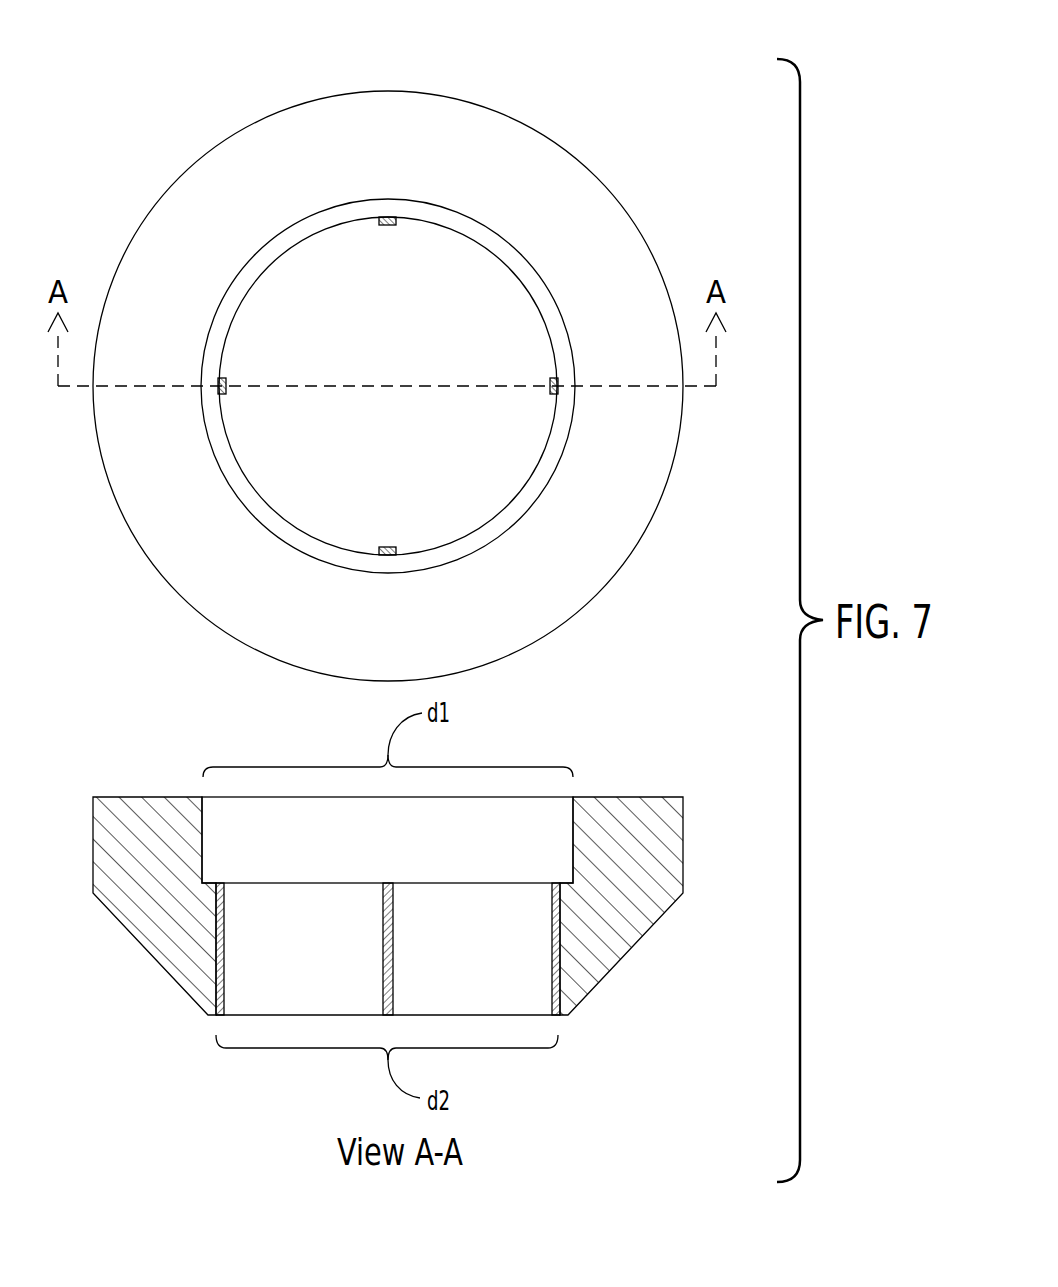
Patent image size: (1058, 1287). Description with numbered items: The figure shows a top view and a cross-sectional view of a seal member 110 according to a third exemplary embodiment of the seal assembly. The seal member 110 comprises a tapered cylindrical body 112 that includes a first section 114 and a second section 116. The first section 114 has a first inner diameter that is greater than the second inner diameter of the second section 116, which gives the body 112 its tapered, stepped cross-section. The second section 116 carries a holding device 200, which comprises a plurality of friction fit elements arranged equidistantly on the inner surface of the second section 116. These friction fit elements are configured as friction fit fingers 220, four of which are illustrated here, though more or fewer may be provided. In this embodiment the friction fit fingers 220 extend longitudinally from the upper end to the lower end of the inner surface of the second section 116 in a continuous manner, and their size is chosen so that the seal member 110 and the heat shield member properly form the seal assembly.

The seal member 110 is at (618, 102).
The tapered cylindrical body 112 is at (93, 842).
The first section 114 is at (263, 524).
The second section 116 is at (538, 469).
The holding device 200 is at (572, 940).
The friction fit fingers 220 is at (384, 226).